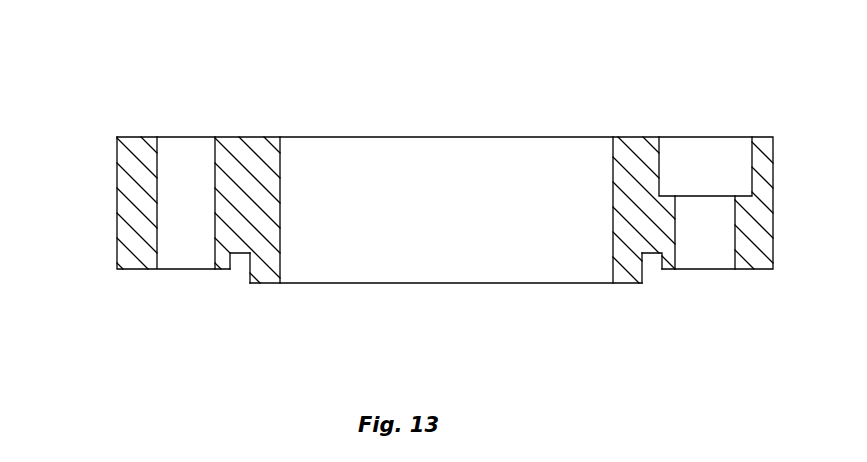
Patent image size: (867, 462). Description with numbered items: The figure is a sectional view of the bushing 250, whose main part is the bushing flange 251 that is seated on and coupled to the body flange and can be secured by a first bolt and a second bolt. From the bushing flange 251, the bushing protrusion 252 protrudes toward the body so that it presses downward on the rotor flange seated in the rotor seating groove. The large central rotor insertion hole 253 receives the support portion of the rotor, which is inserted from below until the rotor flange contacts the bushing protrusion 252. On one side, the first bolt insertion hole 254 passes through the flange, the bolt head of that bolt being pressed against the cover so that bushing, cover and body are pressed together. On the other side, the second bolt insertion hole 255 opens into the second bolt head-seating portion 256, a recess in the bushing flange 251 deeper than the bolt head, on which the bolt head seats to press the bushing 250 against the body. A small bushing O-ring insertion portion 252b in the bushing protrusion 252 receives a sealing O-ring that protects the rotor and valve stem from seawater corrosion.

The bushing 250 is at (262, 116).
The bushing flange 251 is at (135, 206).
The bushing protrusion 252 is at (249, 277).
The bushing O-ring insertion portion 252b is at (238, 262).
The rotor insertion hole 253 is at (443, 165).
The first bolt insertion hole 254 is at (187, 165).
The second bolt insertion hole 255 is at (705, 240).
The second bolt head-seating portion 256 is at (704, 165).